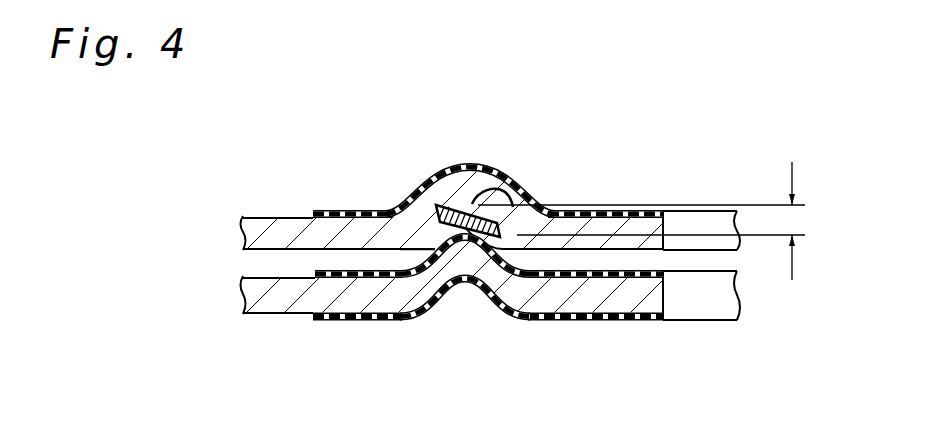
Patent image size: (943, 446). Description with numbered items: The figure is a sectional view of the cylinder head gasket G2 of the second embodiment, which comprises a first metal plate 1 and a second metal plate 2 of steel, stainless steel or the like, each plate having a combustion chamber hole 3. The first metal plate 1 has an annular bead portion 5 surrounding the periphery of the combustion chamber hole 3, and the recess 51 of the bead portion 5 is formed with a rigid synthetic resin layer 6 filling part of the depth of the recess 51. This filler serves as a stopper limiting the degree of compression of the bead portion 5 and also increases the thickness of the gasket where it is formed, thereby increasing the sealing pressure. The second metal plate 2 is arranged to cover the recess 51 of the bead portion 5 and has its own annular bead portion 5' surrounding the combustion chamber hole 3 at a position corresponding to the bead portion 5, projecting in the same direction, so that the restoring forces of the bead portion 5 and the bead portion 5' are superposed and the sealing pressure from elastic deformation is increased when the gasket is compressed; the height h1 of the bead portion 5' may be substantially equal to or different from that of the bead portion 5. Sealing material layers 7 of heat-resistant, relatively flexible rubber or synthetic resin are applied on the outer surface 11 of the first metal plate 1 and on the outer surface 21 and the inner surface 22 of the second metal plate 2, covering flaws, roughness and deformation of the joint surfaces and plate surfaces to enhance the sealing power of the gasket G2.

The first metal plate 1 is at (243, 230).
The second metal plate 2 is at (245, 297).
The outer surface of the first metal plate 11 is at (243, 229).
The outer surface of the second metal plate 21 is at (302, 318).
The inner surface of the second metal plate 22 is at (266, 278).
The combustion chamber hole 3 is at (700, 288).
The bead portion 5 is at (470, 154).
The recess of the bead portion 51 is at (430, 242).
The bead portion of the second metal plate 5' is at (475, 314).
The rigid synthetic resin layer 6 is at (506, 195).
The sealing material layer 7 is at (595, 325).
The cylinder head gasket G2 is at (643, 158).
The height of protrusion h1 is at (667, 221).